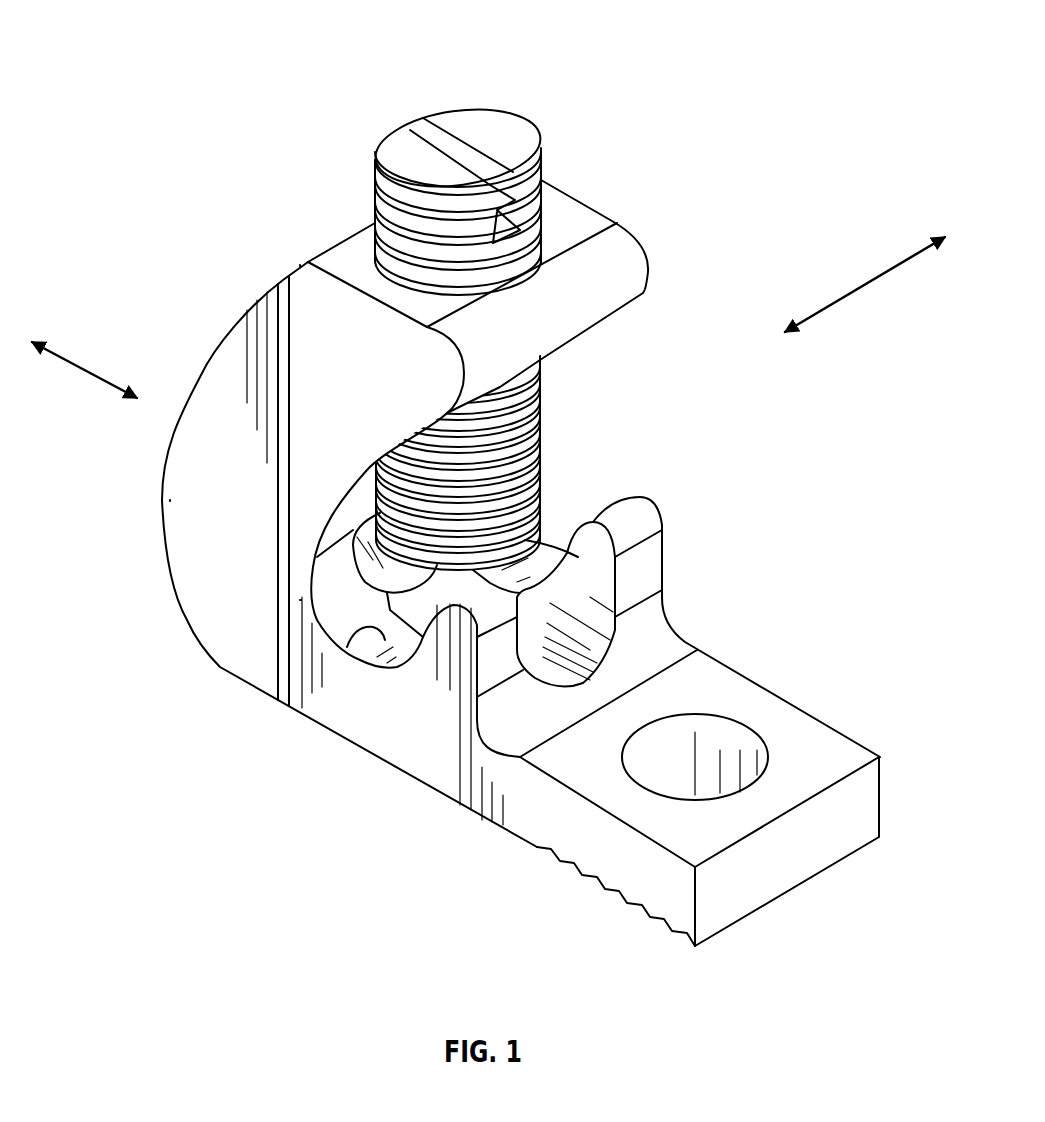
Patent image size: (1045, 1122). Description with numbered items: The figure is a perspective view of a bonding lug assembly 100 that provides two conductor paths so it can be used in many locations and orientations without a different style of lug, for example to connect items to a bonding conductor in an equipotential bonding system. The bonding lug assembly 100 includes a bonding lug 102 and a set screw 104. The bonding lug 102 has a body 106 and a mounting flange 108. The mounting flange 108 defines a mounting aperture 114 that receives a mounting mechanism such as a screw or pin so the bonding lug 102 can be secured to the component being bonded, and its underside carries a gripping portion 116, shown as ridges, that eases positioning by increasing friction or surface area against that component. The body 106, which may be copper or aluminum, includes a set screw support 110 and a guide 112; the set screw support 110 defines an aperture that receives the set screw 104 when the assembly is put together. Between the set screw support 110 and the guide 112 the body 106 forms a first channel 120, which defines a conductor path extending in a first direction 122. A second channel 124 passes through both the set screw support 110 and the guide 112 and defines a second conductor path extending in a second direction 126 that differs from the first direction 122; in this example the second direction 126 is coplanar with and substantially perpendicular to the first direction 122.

The bonding lug assembly 100 is at (202, 37).
The bonding lug 102 is at (218, 390).
The set screw 104 is at (395, 163).
The body 106 is at (238, 653).
The mounting flange 108 is at (545, 812).
The set screw support 110 is at (267, 297).
The guide 112 is at (640, 525).
The mounting aperture 114 is at (730, 745).
The gripping portion 116 is at (577, 870).
The first channel 120 is at (353, 627).
The first direction 122 is at (868, 283).
The second channel 124 is at (590, 590).
The second direction 126 is at (83, 367).